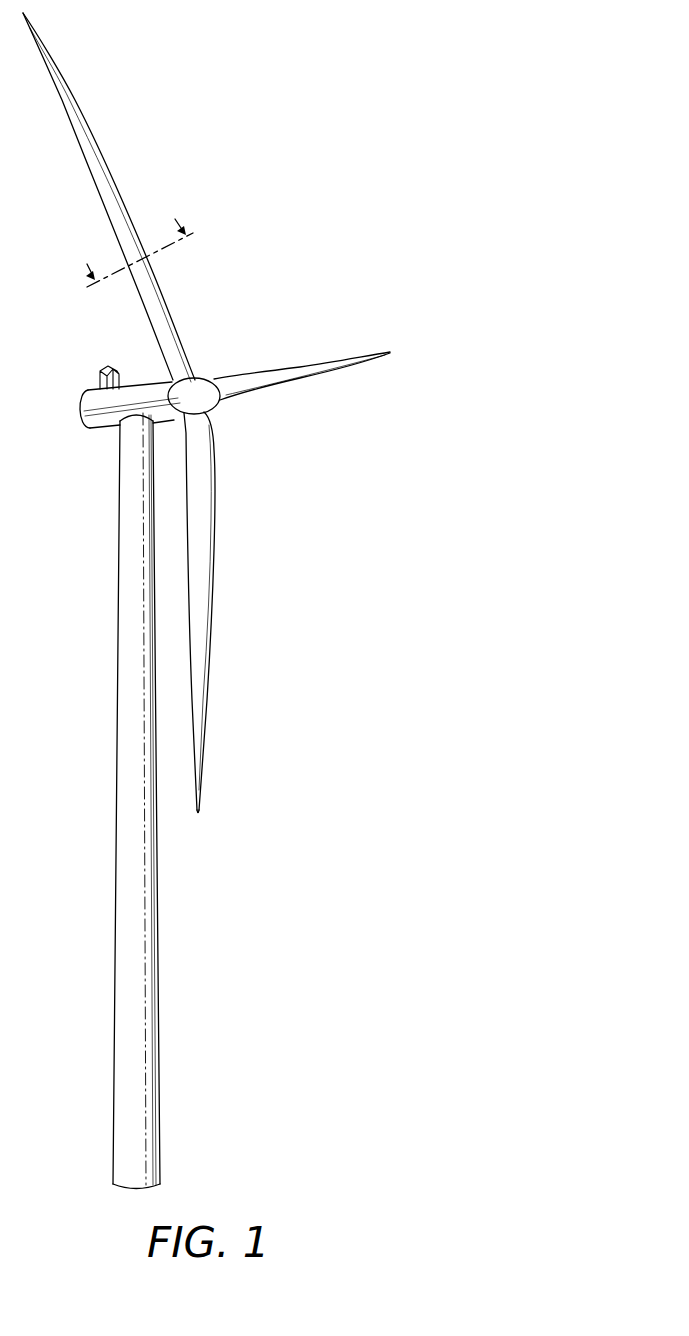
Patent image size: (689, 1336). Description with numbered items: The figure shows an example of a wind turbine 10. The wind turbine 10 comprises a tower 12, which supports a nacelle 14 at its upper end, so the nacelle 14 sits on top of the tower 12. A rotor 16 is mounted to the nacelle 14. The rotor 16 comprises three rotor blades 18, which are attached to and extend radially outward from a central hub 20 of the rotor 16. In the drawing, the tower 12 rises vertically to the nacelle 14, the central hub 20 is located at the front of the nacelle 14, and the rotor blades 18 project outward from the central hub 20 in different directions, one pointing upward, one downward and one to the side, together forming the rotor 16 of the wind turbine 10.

The wind turbine 10 is at (311, 95).
The tower 12 is at (122, 870).
The nacelle 14 is at (90, 398).
The rotor 16 is at (232, 350).
The rotor blades 18 is at (108, 183).
The central hub 20 is at (230, 404).